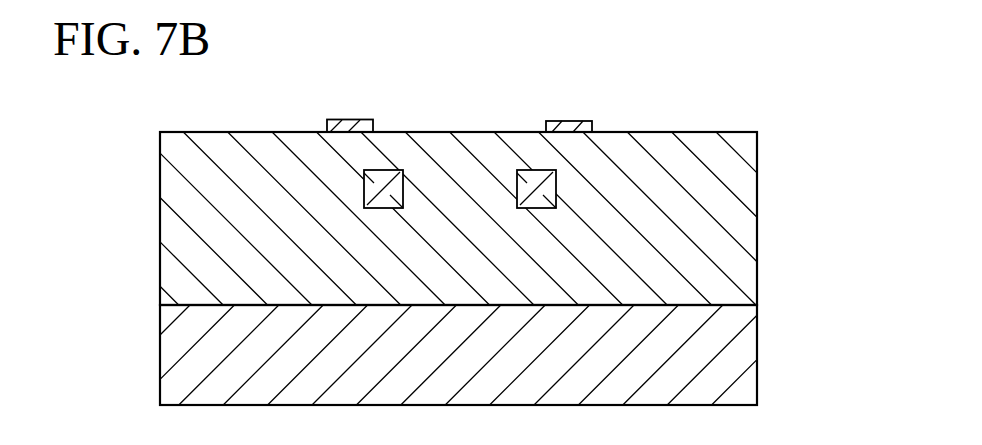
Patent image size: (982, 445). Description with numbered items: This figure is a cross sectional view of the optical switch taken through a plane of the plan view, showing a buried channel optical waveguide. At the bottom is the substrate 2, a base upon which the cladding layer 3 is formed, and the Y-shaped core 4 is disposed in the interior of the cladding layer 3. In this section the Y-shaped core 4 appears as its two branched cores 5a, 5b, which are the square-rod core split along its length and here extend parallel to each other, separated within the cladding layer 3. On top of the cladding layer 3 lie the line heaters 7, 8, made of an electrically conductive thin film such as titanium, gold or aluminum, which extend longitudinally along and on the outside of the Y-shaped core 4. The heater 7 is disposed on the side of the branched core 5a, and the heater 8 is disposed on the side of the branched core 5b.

The substrate 2 is at (745, 360).
The cladding layer 3 is at (757, 255).
The Y-shaped core 4 is at (557, 187).
The branched core 5a is at (530, 180).
The branched core 5b is at (386, 183).
The line heater 7 is at (557, 121).
The line heater 8 is at (353, 120).